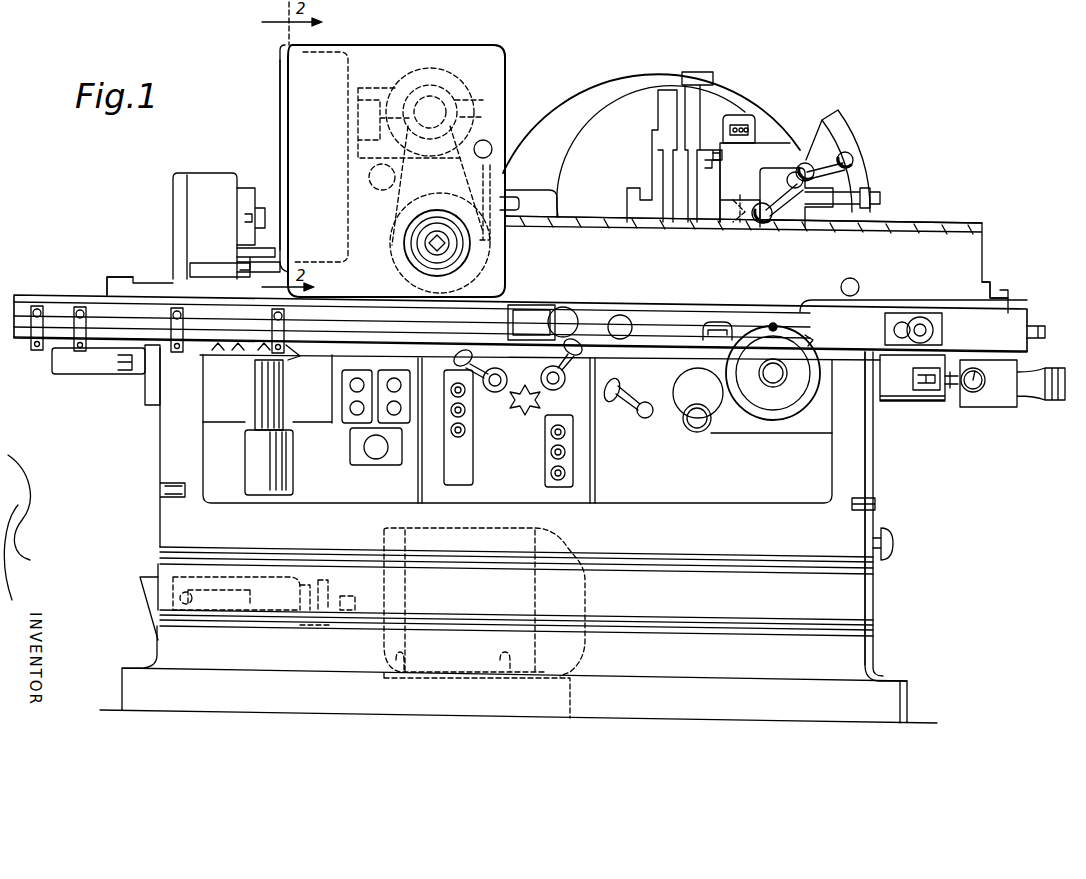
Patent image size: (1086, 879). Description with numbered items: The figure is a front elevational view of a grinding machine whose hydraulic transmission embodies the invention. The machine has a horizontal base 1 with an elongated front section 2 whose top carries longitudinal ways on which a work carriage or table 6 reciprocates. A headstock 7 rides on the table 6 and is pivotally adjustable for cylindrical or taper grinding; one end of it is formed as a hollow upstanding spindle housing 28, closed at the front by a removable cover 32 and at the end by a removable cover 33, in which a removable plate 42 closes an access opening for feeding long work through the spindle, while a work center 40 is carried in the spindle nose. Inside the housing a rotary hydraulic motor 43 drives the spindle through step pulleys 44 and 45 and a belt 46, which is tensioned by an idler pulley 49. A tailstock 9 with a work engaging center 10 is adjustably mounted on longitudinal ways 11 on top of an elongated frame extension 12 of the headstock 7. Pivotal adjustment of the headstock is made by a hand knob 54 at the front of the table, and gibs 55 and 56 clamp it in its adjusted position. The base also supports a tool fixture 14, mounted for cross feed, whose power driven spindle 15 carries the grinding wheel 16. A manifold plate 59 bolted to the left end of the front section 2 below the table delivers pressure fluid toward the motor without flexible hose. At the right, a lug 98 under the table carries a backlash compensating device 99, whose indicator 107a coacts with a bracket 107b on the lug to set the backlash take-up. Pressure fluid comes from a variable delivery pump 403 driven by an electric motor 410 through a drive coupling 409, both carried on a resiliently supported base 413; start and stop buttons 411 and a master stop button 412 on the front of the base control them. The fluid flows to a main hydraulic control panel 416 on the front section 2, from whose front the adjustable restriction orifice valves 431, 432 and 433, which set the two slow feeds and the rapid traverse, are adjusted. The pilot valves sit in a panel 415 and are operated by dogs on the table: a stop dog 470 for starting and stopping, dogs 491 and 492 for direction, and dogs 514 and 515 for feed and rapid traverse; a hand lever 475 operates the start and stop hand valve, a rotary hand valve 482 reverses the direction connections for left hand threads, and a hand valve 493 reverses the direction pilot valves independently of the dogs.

The base 1 is at (889, 598).
The front section 2 is at (166, 520).
The work carriage or table 6 is at (1018, 316).
The headstock 7 is at (386, 161).
The tailstock 9 is at (798, 153).
The work engaging center 10 is at (736, 200).
The longitudinal ways 11 is at (940, 220).
The frame extension 12 is at (564, 240).
The tool fixture 14 is at (622, 84).
The power driven spindle 15 is at (655, 200).
The grinding wheel 16 is at (672, 208).
The spindle housing 28 is at (498, 124).
The removable cover 32 is at (468, 58).
The removable cover 33 is at (281, 124).
The work center 40 is at (512, 197).
The removable plate 42 is at (273, 188).
The motor 43 is at (405, 88).
The step pulley 44 is at (485, 99).
The step pulley 45 is at (392, 262).
The belt 46 is at (400, 222).
The idler pulley 49 is at (380, 190).
The hand knob 54 is at (858, 282).
The gib 55 is at (115, 276).
The gib 56 is at (1008, 292).
The manifold plate 59 is at (146, 394).
The lug 98 is at (912, 395).
The backlash compensating device 99 is at (1005, 400).
The indicator 107a is at (986, 378).
The bracket 107b is at (911, 379).
The variable delivery pump 403 is at (300, 572).
The drive coupling 409 is at (326, 583).
The electric motor 410 is at (498, 528).
The base 413 is at (572, 700).
The start and stop buttons 411 is at (400, 407).
The master stop button 412 is at (374, 459).
The panel 415 is at (235, 415).
The main hydraulic control panel 416 is at (585, 484).
The adjustable restriction orifice valve 431 is at (551, 432).
The adjustable restriction orifice valve 432 is at (551, 452).
The adjustable restriction orifice valve 433 is at (551, 473).
The stop dog 470 is at (98, 361).
The hand lever 475 is at (582, 354).
The rotary hand valve 482 is at (466, 431).
The dog 491 is at (36, 349).
The dog 492 is at (302, 355).
The hand valve 493 is at (541, 400).
The dog 514 is at (177, 352).
The dog 515 is at (284, 352).